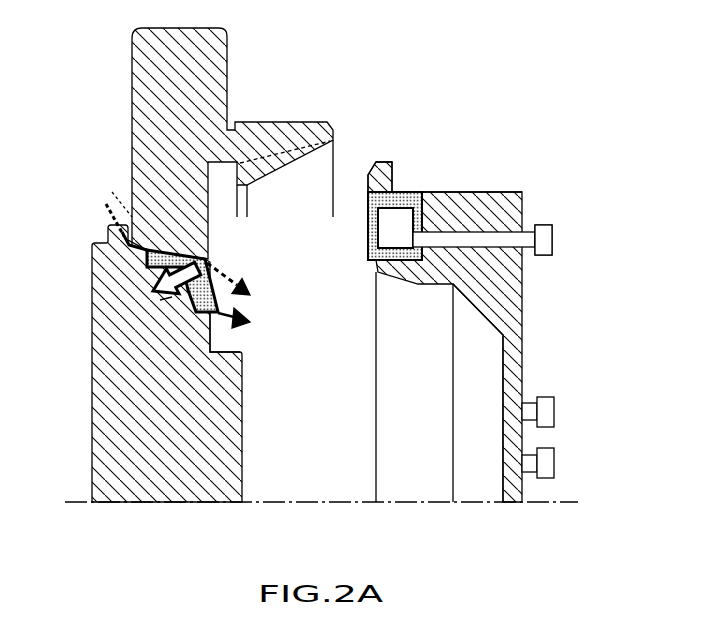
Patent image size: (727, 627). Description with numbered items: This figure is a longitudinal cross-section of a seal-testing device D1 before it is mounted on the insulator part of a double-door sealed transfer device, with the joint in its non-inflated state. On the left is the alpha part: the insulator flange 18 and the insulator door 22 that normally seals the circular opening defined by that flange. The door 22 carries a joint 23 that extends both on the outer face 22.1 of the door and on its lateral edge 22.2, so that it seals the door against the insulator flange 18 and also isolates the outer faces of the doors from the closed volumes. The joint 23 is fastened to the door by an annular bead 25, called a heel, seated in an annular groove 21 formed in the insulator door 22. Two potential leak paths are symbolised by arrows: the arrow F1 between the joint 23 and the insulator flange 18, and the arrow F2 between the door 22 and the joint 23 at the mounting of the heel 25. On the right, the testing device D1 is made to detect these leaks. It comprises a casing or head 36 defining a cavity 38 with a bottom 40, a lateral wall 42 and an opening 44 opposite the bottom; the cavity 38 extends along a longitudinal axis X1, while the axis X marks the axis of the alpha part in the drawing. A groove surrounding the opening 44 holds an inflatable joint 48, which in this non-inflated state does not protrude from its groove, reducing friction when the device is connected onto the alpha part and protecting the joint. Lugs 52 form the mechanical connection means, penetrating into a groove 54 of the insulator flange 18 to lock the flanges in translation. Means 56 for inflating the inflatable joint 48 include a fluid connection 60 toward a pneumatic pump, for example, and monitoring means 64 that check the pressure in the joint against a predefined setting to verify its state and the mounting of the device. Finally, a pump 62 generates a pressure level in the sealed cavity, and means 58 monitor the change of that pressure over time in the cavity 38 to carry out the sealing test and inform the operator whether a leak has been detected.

The insulator flange 18 is at (248, 78).
The groove 54 is at (240, 160).
The insulator door 22 is at (139, 507).
The outer face 22.1 is at (212, 347).
The lateral edge 22.2 is at (146, 257).
The joint 23 is at (112, 198).
The annular bead 25 is at (162, 282).
The annular groove 21 is at (172, 297).
The casing 36 is at (503, 203).
The lugs 52 is at (390, 173).
The lateral wall 42 is at (486, 198).
The bottom 40 is at (508, 312).
The opening 44 is at (375, 284).
The cavity 38 is at (483, 385).
The inflatable joint 48 is at (424, 211).
The fluid connection 60 is at (508, 233).
The means for inflating 56 is at (553, 240).
The monitoring means 64 is at (543, 240).
The pump 62 is at (555, 412).
The means for monitoring 58 is at (555, 462).
The arrow F1 is at (216, 266).
The arrow F2 is at (230, 311).
The seal-testing device D1 is at (543, 339).
The axis X is at (80, 502).
The longitudinal axis X1 is at (557, 502).